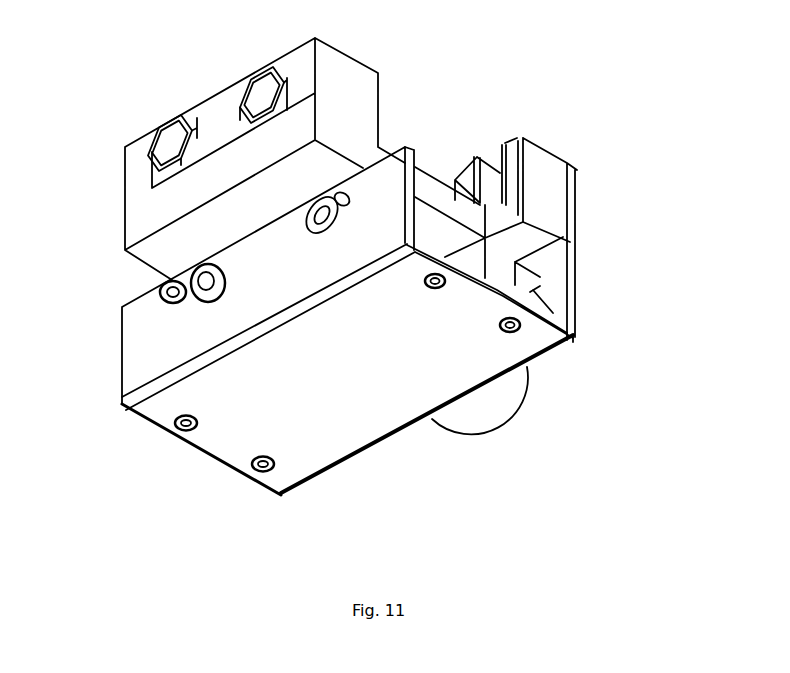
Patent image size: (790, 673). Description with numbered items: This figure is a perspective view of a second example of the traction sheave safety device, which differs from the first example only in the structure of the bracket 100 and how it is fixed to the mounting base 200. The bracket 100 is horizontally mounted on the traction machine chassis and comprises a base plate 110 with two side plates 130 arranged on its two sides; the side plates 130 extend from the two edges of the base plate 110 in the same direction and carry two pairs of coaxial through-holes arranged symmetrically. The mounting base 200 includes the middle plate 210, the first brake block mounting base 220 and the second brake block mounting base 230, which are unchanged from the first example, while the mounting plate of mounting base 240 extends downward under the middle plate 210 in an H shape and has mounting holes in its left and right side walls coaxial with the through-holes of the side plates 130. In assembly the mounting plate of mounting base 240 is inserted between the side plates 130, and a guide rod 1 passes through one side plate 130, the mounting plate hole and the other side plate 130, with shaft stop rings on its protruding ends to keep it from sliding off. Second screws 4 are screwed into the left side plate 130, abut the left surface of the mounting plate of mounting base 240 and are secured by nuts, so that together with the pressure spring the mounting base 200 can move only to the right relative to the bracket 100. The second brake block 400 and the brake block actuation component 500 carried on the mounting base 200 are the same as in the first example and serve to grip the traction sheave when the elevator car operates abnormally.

The guide rod 1 is at (188, 287).
The second screws 4 is at (170, 290).
The bracket 100 is at (438, 552).
The base plate 110 is at (535, 518).
The side plates 130 is at (573, 340).
The mounting base 200 is at (247, 163).
The middle plate 210 is at (453, 207).
The first brake block mounting base 220 is at (357, 105).
The second brake block mounting base 230 is at (540, 188).
The mounting plate of mounting base 240 is at (557, 279).
The second brake block 400 is at (523, 138).
The brake block actuation component 500 is at (493, 403).